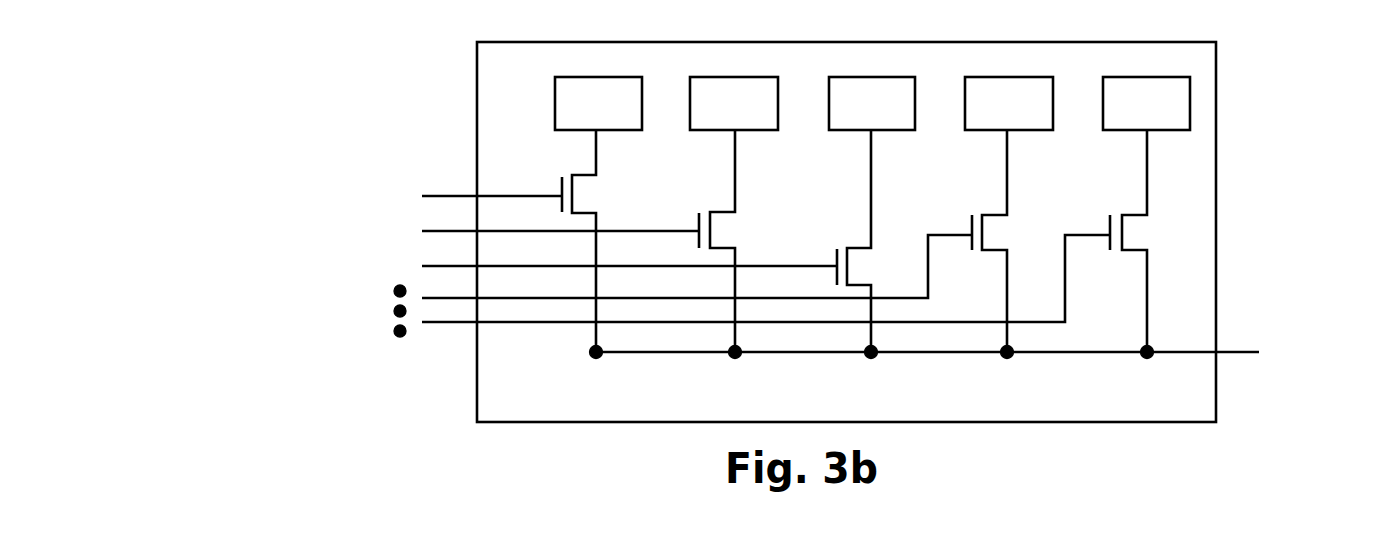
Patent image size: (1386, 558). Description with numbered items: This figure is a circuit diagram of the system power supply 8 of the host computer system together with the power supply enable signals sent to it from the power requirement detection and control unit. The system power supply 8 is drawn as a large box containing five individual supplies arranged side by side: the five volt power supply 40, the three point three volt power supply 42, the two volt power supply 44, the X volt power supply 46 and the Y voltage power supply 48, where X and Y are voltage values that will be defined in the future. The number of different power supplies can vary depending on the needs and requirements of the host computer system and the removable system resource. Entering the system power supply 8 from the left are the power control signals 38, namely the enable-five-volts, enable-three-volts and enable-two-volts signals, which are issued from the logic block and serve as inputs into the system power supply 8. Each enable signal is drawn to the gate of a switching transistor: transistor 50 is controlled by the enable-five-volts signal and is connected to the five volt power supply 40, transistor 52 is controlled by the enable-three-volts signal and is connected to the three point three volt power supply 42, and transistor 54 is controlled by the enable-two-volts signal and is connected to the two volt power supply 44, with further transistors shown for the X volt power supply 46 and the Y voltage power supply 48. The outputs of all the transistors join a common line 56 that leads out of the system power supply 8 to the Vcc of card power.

The system power supply 8 is at (846, 232).
The power control signals 38 is at (532, 254).
The 5 volt power supply 40 is at (588, 77).
The 3.3 volt power supply 42 is at (727, 77).
The 2 volt power supply 44 is at (870, 77).
The X volt power supply 46 is at (1003, 77).
The Y voltage power supply 48 is at (1137, 77).
The 5 volt enable transistor 50 is at (581, 241).
The 3 volt enable transistor 52 is at (718, 241).
The 2 volt enable transistor 54 is at (855, 241).
The Vcc output line to card power 56 is at (971, 354).